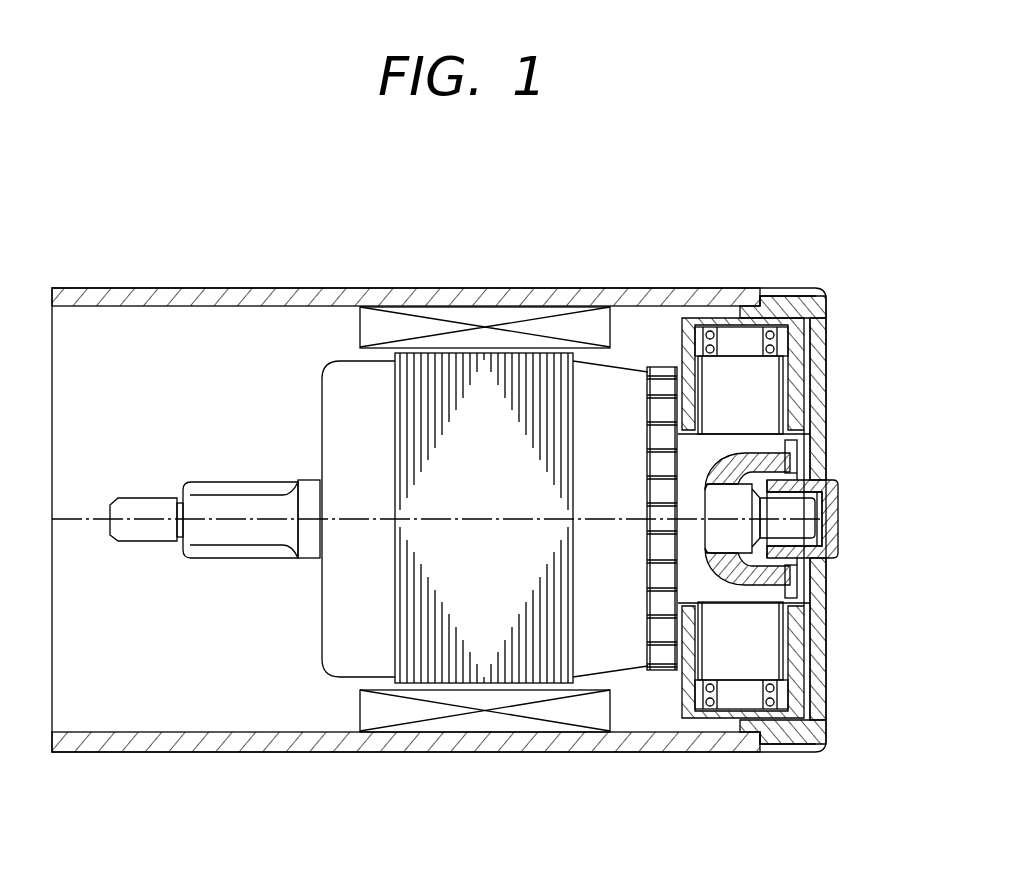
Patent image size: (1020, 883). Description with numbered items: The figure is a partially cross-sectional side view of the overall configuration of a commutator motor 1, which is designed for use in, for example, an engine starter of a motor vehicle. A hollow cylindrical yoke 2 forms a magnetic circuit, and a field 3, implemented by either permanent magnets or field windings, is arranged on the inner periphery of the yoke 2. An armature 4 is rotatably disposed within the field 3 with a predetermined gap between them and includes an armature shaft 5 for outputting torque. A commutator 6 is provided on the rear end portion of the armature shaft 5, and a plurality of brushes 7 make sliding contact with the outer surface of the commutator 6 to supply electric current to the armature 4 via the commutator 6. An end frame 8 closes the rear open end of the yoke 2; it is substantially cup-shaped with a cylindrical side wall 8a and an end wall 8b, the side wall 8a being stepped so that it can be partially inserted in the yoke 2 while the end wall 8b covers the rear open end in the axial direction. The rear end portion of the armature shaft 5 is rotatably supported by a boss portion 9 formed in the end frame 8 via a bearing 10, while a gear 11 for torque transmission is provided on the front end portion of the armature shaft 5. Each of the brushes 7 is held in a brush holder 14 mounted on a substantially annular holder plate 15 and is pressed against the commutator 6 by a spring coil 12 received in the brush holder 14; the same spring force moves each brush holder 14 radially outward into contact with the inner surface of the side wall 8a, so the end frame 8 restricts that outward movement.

The commutator motor 1 is at (589, 243).
The yoke 2 is at (297, 296).
The field 3 is at (450, 310).
The armature 4 is at (487, 628).
The armature shaft 5 is at (140, 532).
The commutator 6 is at (738, 590).
The brushes 7 is at (750, 373).
The end frame 8 is at (825, 603).
The side wall 8a is at (798, 745).
The end wall 8b is at (823, 668).
The boss portion 9 is at (838, 507).
The bearing 10 is at (823, 472).
The gear 11 is at (238, 548).
The spring coil 12 is at (710, 330).
The brush holders 14 is at (797, 342).
The holder plate 15 is at (808, 380).